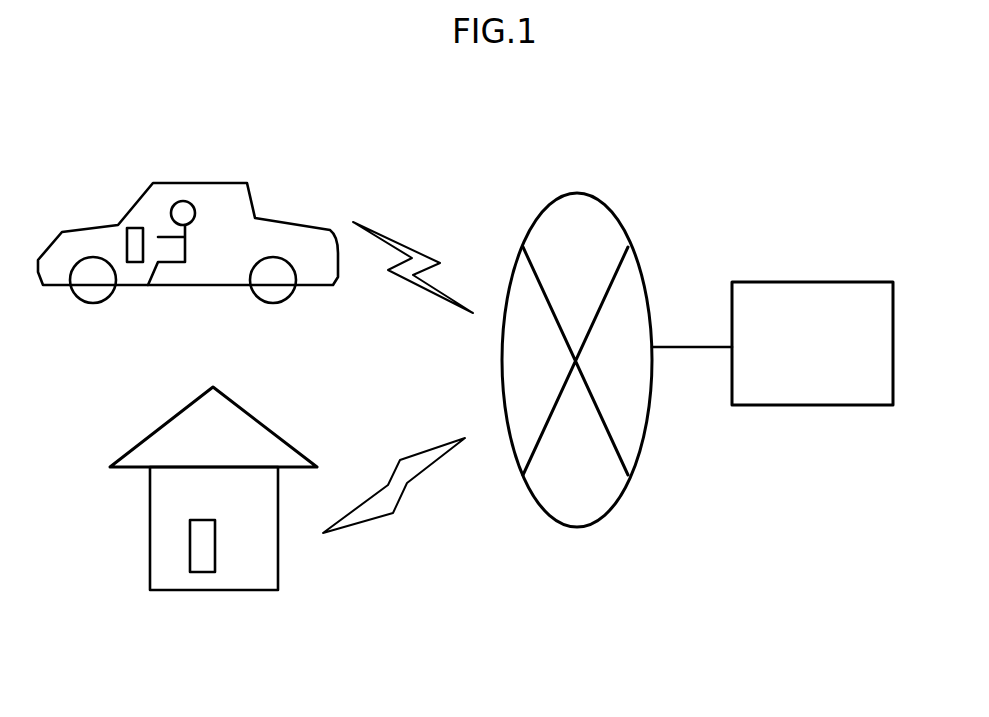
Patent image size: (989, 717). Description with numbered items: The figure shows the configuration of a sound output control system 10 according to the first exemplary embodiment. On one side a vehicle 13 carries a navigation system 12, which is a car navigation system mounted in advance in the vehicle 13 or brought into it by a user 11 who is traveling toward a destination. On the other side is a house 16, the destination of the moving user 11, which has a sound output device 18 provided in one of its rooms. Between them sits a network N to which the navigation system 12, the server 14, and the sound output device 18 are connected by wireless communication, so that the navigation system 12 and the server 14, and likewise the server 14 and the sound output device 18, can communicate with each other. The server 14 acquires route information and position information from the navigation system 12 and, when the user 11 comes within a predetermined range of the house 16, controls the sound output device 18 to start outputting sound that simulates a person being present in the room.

The sound output control system 10 is at (805, 163).
The user 11 is at (192, 205).
The navigation system 12 is at (125, 238).
The vehicle 13 is at (167, 184).
The server 14 is at (893, 293).
The house 16 is at (268, 432).
The sound output device 18 is at (192, 553).
The network N is at (612, 218).